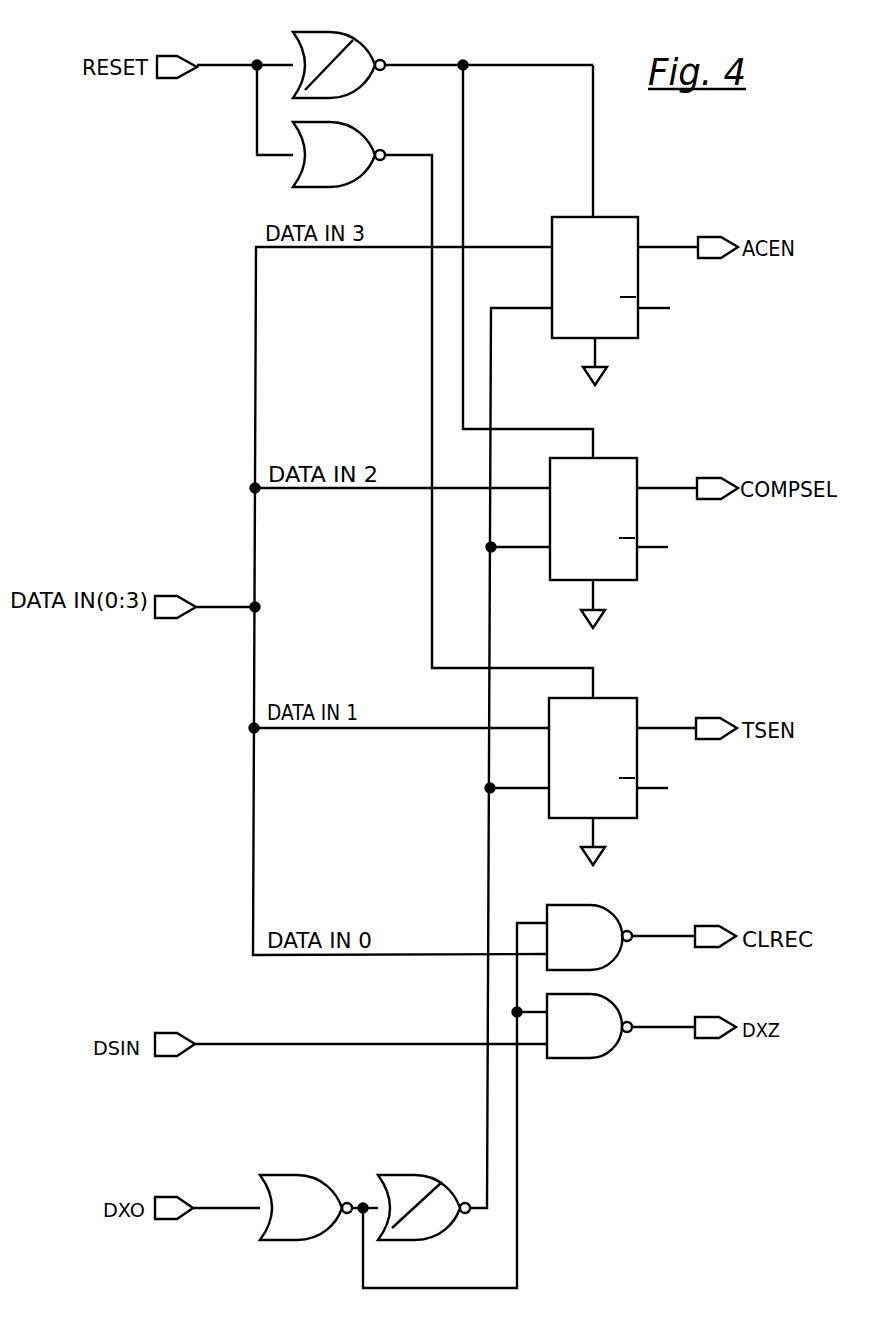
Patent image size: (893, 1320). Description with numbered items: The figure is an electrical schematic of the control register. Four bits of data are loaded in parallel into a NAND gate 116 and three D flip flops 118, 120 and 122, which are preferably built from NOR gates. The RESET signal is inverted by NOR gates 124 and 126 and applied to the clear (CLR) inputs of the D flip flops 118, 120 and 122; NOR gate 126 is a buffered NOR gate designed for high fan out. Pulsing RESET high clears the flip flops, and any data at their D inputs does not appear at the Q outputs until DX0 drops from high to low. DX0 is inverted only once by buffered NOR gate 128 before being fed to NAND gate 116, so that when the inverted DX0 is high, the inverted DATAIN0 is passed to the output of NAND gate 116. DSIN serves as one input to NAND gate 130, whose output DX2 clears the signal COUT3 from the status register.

The NOR gate 126 is at (358, 49).
The NOR gate 124 is at (354, 143).
The D flip flop 122 is at (619, 286).
The D flip flop 120 is at (615, 520).
The D flip flop 118 is at (618, 759).
The NAND gate 116 is at (609, 923).
The NAND gate 130 is at (611, 1016).
The NOR gate 128 is at (365, 1190).